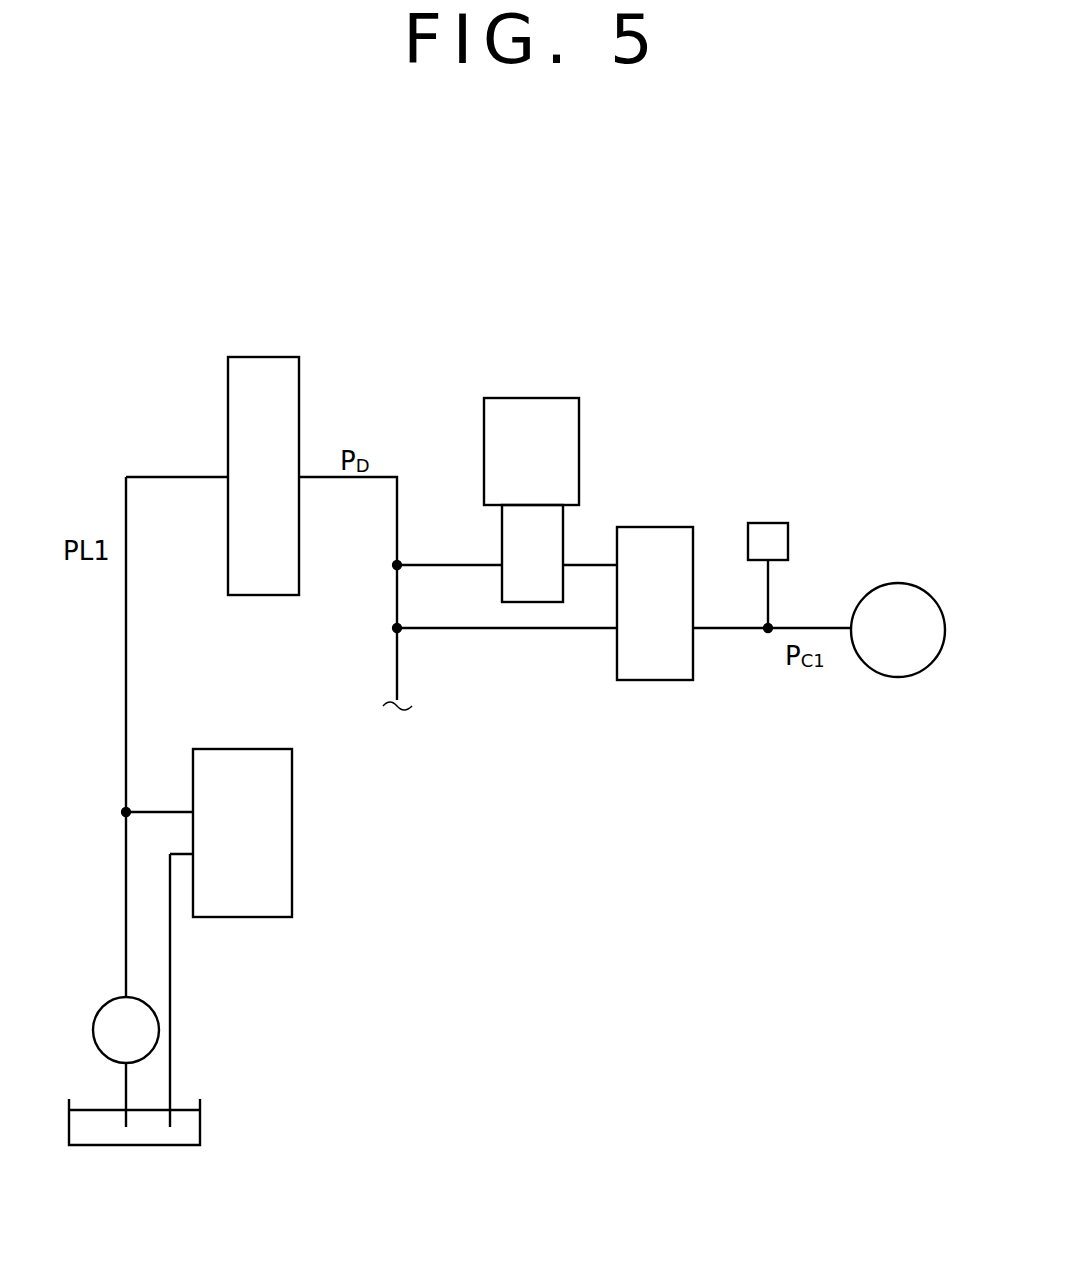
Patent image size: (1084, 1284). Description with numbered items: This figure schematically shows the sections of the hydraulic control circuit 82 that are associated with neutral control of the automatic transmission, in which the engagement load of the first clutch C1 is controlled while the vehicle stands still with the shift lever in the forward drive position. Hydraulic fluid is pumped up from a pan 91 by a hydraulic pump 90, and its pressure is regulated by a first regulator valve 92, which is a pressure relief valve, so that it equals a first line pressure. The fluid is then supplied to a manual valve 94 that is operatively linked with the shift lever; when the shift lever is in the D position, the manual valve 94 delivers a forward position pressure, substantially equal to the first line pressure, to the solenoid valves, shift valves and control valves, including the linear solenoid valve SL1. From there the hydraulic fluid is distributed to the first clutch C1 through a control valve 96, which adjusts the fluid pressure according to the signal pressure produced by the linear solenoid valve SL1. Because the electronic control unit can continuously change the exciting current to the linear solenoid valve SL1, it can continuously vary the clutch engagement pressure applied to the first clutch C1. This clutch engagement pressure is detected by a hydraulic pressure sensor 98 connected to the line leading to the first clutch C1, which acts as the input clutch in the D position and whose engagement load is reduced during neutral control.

The hydraulic control circuit 82 is at (828, 346).
The hydraulic pump 90 is at (108, 1023).
The pan 91 is at (200, 1127).
The first regulator valve 92 is at (244, 765).
The manual valve 94 is at (253, 356).
The control valve 96 is at (654, 540).
The hydraulic pressure sensor 98 is at (770, 527).
The linear solenoid valve SL1 is at (535, 414).
The first clutch C1 is at (898, 630).